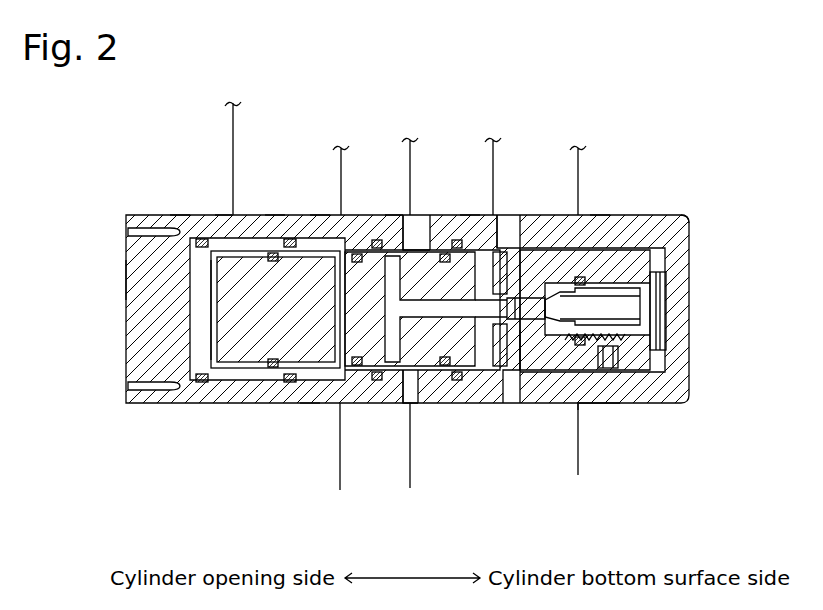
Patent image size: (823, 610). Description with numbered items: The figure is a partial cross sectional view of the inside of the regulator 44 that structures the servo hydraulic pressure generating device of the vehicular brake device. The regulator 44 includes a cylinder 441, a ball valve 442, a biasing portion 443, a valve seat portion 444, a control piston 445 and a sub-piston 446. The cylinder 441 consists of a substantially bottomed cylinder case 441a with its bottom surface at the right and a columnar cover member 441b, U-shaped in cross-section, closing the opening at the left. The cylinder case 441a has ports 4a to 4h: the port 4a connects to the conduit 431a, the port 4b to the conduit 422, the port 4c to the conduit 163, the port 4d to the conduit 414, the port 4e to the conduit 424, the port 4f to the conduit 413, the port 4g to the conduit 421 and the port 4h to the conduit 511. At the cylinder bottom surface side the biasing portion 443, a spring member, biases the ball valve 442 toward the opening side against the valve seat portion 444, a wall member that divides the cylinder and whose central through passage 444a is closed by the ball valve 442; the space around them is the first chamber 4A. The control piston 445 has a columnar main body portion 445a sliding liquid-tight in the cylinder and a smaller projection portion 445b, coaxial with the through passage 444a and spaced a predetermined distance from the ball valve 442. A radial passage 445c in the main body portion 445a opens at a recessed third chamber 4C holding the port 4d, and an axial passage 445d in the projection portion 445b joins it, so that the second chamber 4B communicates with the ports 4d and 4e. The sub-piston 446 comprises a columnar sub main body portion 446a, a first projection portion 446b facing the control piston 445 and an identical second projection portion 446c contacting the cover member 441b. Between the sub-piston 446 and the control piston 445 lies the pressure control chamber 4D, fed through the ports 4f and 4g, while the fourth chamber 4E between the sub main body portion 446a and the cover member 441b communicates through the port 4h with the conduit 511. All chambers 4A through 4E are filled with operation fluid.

The regulator 44 is at (418, 315).
The cylinder 441 is at (697, 240).
The cylinder case 441a is at (660, 222).
The cover member 441b is at (138, 262).
The ball valve 442 is at (600, 403).
The biasing portion 443 is at (660, 355).
The valve seat portion 444 is at (535, 255).
The through passage 444a is at (545, 403).
The control piston 445 is at (408, 376).
The main body portion 445a is at (338, 403).
The projection portion 445b is at (500, 340).
The passage 445c is at (380, 403).
The passage 445d is at (465, 330).
The sub-piston 446 is at (206, 392).
The sub main body portion 446a is at (245, 340).
The first projection portion 446b is at (270, 370).
The second projection portion 446c is at (210, 318).
The first chamber 4A is at (620, 292).
The second chamber 4B is at (510, 215).
The third chamber 4C is at (426, 215).
The pressure control chamber 4D is at (278, 215).
The fourth chamber 4E is at (180, 215).
The port 4a is at (600, 215).
The port 4b is at (585, 403).
The port 4c is at (475, 215).
The port 4d is at (390, 215).
The port 4e is at (414, 403).
The port 4f is at (320, 215).
The port 4g is at (310, 403).
The port 4h is at (224, 215).
The conduit 163 is at (497, 158).
The conduit 413 is at (344, 162).
The conduit 414 is at (414, 158).
The conduit 421 is at (340, 485).
The conduit 422 is at (578, 466).
The conduit 424 is at (410, 484).
The conduit 431a is at (582, 168).
The conduit 511 is at (236, 131).